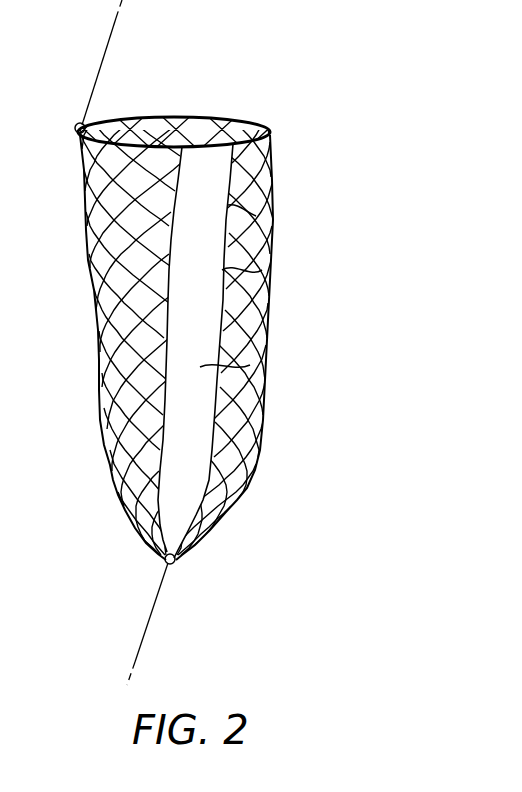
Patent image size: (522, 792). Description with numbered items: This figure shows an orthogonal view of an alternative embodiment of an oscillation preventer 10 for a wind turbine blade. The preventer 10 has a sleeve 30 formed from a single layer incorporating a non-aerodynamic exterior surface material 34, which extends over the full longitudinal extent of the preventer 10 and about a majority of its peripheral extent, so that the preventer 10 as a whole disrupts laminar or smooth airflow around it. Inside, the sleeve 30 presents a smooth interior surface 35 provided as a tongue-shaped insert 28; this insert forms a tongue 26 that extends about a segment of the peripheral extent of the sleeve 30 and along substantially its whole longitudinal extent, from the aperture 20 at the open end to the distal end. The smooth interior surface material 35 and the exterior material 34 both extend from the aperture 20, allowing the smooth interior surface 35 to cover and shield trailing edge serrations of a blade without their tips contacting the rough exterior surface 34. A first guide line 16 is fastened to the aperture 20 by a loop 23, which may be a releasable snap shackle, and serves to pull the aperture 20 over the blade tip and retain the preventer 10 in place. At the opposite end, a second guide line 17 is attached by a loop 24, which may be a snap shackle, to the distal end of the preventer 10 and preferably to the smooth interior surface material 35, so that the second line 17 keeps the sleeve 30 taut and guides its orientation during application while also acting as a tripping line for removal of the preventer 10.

The oscillation preventer 10 is at (196, 335).
The first guide line 16 is at (100, 63).
The second guide line 17 is at (148, 618).
The aperture 20 is at (245, 105).
The loop 23 is at (76, 126).
The snap shackle loop 24 is at (171, 565).
The tongue 26 is at (200, 367).
The tongue-shaped insert 28 is at (222, 270).
The sleeve 30 is at (266, 487).
The exterior surface 34 is at (85, 259).
The smooth interior surface 35 is at (211, 214).